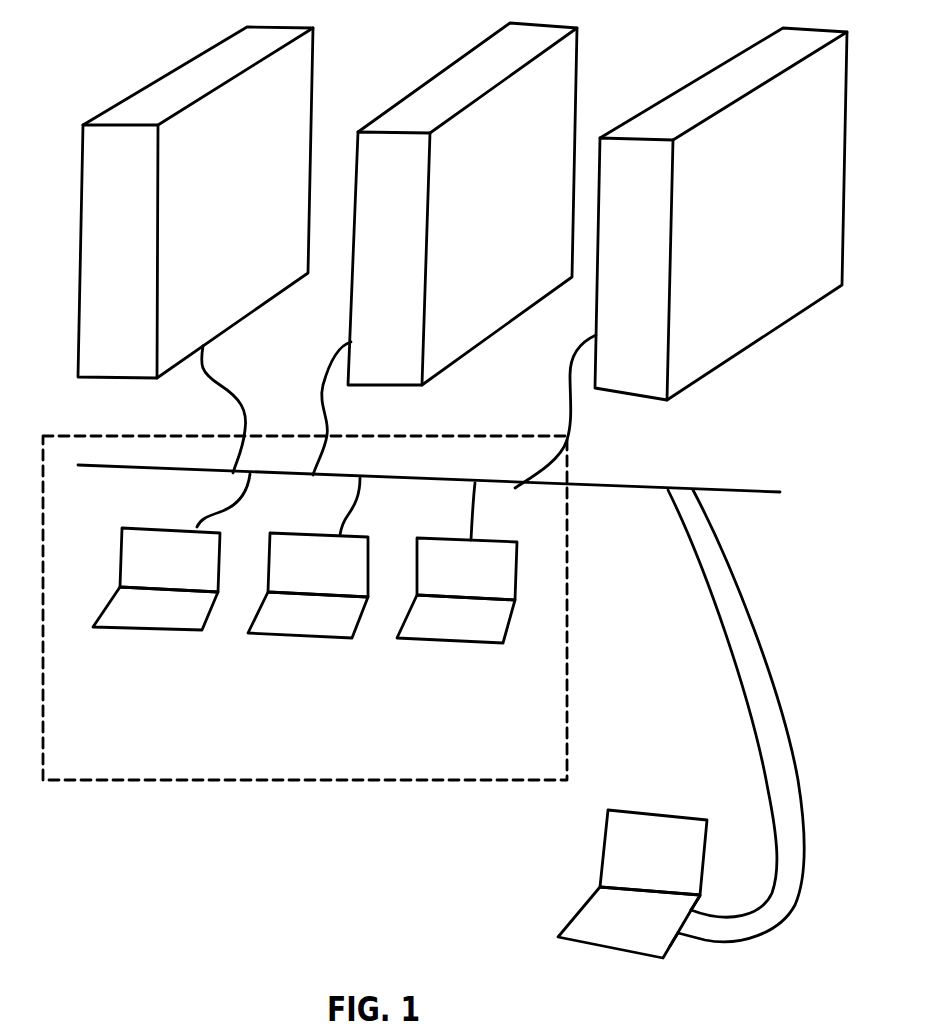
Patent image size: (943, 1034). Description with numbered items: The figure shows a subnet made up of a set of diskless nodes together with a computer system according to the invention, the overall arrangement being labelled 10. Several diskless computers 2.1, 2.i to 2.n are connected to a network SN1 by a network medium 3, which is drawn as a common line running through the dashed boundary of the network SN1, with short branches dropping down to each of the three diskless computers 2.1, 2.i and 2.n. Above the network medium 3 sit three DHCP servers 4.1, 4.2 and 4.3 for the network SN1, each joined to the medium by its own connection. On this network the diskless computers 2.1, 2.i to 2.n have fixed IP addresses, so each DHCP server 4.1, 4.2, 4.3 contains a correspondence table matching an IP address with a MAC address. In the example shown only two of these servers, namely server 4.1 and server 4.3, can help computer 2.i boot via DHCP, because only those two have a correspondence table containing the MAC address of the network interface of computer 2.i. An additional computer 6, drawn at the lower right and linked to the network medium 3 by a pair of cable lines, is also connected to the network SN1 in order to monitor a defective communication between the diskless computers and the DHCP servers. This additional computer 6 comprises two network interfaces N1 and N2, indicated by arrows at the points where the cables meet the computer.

The DHCP server 4.1 is at (130, 97).
The DHCP server 4.2 is at (440, 72).
The DHCP server 4.3 is at (685, 87).
The network medium 3 is at (648, 490).
The network SN1 is at (120, 780).
The diskless computer 2.1 is at (130, 632).
The diskless computer 2.i is at (307, 637).
The diskless computer 2.n is at (458, 645).
The additional computer 6 is at (574, 905).
The network interface N1 is at (681, 940).
The network interface N2 is at (703, 907).
The system 10 is at (140, 1028).